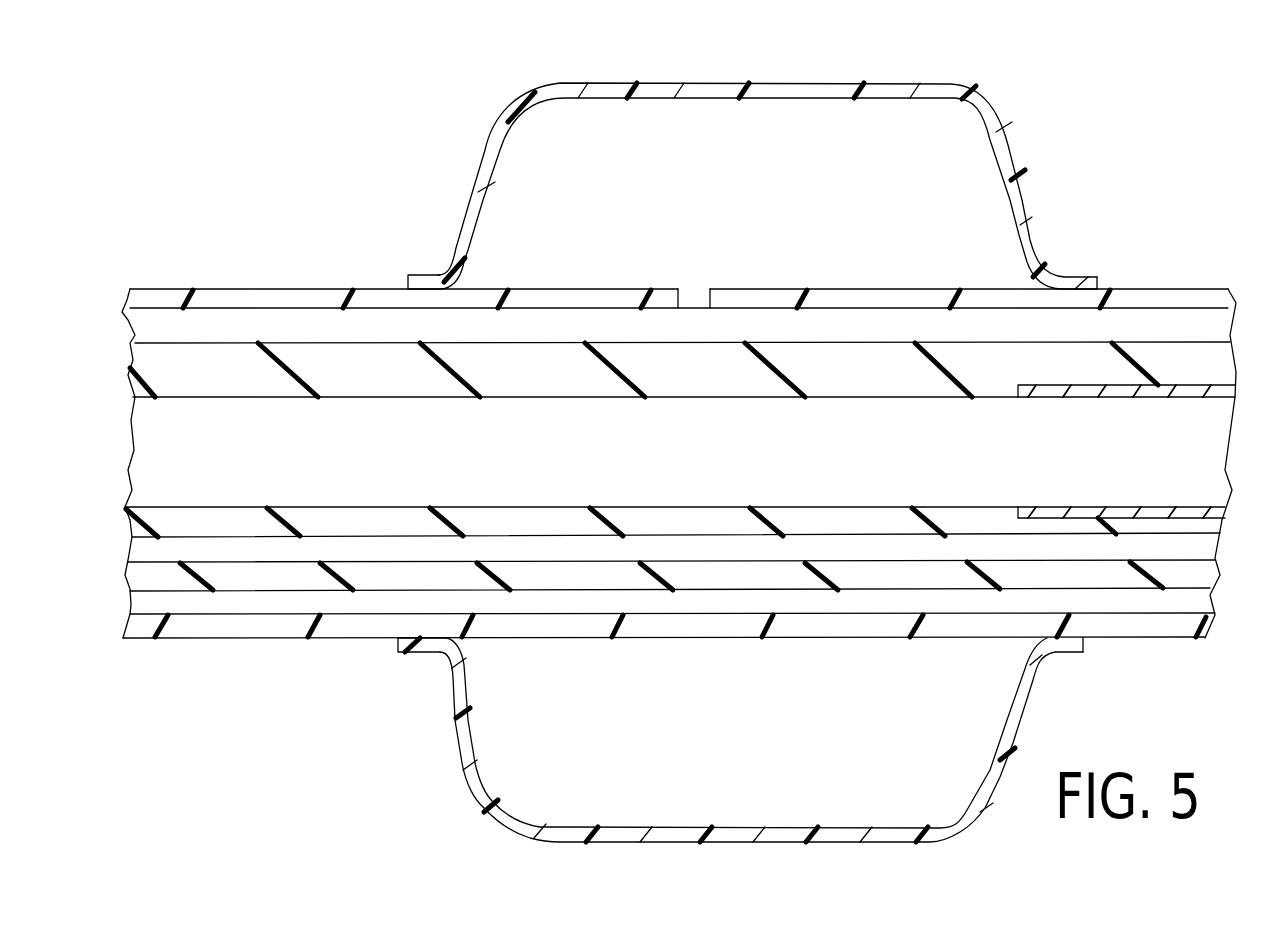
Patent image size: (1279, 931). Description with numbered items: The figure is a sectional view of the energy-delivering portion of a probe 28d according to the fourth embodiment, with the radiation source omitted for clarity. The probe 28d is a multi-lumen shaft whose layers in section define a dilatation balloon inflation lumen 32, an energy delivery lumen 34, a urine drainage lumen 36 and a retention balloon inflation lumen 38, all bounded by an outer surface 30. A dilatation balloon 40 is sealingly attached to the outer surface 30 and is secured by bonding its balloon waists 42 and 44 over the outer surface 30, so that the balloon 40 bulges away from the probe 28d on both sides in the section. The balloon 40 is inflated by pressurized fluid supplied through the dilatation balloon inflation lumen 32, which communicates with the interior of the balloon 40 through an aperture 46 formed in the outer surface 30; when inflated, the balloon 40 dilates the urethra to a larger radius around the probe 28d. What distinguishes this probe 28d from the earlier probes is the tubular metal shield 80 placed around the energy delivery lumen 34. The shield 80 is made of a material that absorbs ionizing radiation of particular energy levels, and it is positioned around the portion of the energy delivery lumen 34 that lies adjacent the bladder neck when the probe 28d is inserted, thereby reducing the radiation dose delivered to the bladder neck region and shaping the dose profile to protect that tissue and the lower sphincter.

The probe 28d is at (174, 280).
The outer surface 30 is at (318, 289).
The dilatation balloon inflation lumen 32 is at (260, 323).
The energy delivery lumen 34 is at (147, 463).
The urine drainage lumen 36 is at (140, 549).
The retention balloon inflation lumen 38 is at (152, 603).
The dilatation balloon 40 is at (770, 83).
The balloon waist 42 is at (430, 276).
The balloon waist 44 is at (1066, 286).
The aperture 46 is at (694, 298).
The tubular metal shield 80 is at (1105, 398).